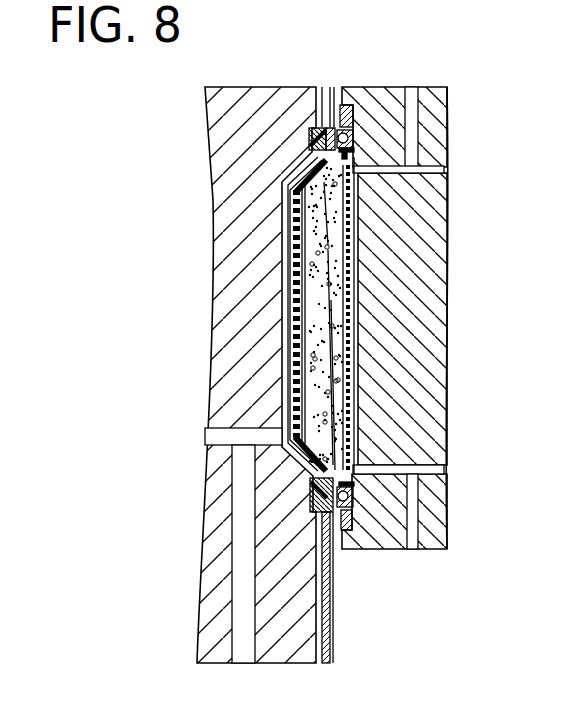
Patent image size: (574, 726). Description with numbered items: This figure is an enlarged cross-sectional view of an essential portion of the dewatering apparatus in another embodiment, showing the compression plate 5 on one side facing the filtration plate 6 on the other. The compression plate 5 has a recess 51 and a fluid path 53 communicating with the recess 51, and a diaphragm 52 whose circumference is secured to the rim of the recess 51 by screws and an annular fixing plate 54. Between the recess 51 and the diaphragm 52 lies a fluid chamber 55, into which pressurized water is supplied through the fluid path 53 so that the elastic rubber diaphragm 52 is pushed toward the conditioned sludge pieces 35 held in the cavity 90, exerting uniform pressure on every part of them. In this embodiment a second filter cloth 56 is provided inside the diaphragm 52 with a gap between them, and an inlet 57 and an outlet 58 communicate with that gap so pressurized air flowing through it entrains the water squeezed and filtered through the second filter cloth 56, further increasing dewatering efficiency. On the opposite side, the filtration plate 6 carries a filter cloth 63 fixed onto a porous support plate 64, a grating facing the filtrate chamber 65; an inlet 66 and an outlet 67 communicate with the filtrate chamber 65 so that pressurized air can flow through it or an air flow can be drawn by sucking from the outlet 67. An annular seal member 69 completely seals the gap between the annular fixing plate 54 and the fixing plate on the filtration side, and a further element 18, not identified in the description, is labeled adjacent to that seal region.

The compression plate 5 is at (245, 87).
The filtration plate 6 is at (443, 87).
The seal ring 18 is at (352, 150).
The conditioned sludge pieces 35 is at (338, 222).
The recess 51 is at (285, 210).
The diaphragm 52 is at (297, 378).
The fluid path 53 is at (240, 663).
The annular fixing plate 54 is at (312, 148).
The fluid chamber 55 is at (287, 306).
The second filter cloth 56 is at (296, 270).
The inlet 57 is at (319, 87).
The outlet 58 is at (320, 663).
The filter cloth 63 is at (334, 372).
The porous support plate 64 is at (349, 353).
The filtrate chamber 65 is at (358, 278).
The inlet 66 is at (410, 87).
The outlet 67 is at (412, 549).
The annular seal member 69 is at (350, 105).
The cavity 90 is at (328, 383).